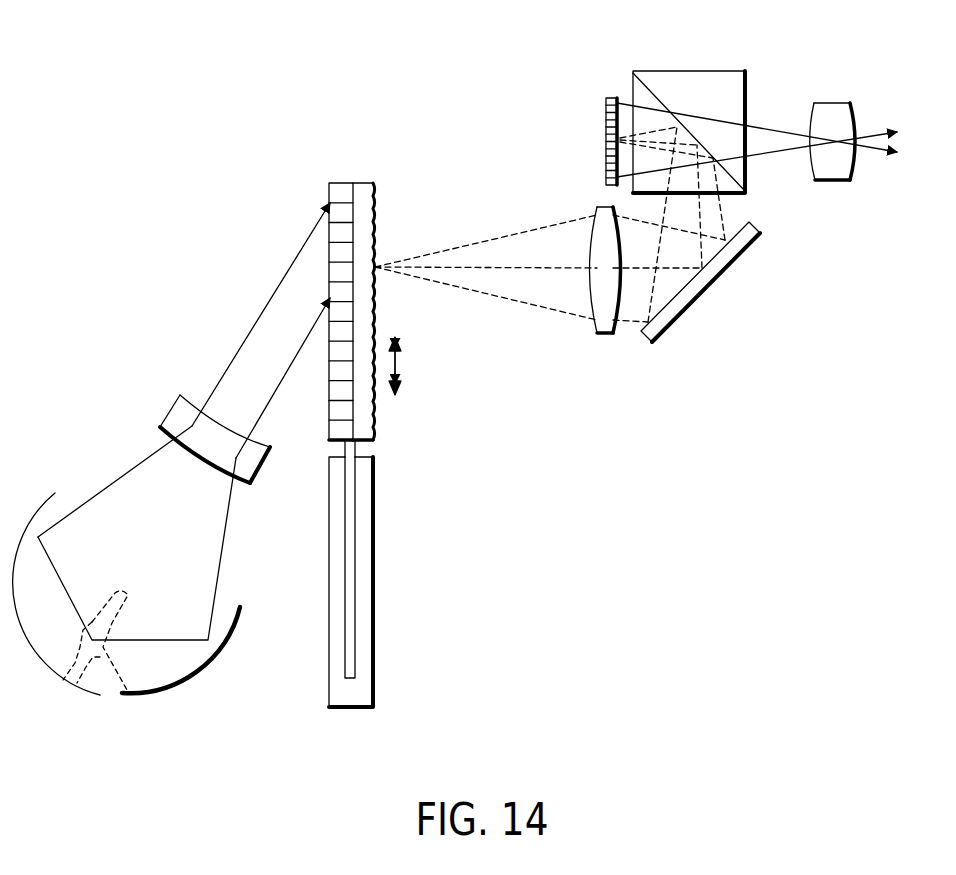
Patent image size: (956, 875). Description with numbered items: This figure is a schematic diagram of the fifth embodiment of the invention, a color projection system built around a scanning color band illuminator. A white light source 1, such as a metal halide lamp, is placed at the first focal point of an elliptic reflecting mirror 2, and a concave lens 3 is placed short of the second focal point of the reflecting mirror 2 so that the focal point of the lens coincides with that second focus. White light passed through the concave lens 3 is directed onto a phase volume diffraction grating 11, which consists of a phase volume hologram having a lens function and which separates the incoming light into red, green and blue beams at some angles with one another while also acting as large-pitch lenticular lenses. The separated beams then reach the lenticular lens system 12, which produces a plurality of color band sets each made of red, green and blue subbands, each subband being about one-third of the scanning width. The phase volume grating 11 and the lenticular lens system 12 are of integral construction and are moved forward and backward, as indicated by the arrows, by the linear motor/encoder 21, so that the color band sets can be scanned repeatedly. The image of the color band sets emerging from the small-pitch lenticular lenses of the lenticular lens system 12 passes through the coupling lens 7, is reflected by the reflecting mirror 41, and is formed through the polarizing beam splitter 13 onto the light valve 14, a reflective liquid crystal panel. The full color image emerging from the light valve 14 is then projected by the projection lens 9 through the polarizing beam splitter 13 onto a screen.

The white light source 1 is at (127, 692).
The elliptic reflecting mirror 2 is at (187, 668).
The concave lens 3 is at (170, 412).
The coupling lens 7 is at (605, 337).
The projection lens 9 is at (830, 102).
The phase volume diffraction grating 11 is at (342, 182).
The lenticular lens system 12 is at (362, 182).
The polarizing beam splitter 13 is at (685, 70).
The light valve 14 is at (605, 135).
The linear motor/encoder 21 is at (374, 585).
The reflecting mirror 41 is at (710, 280).